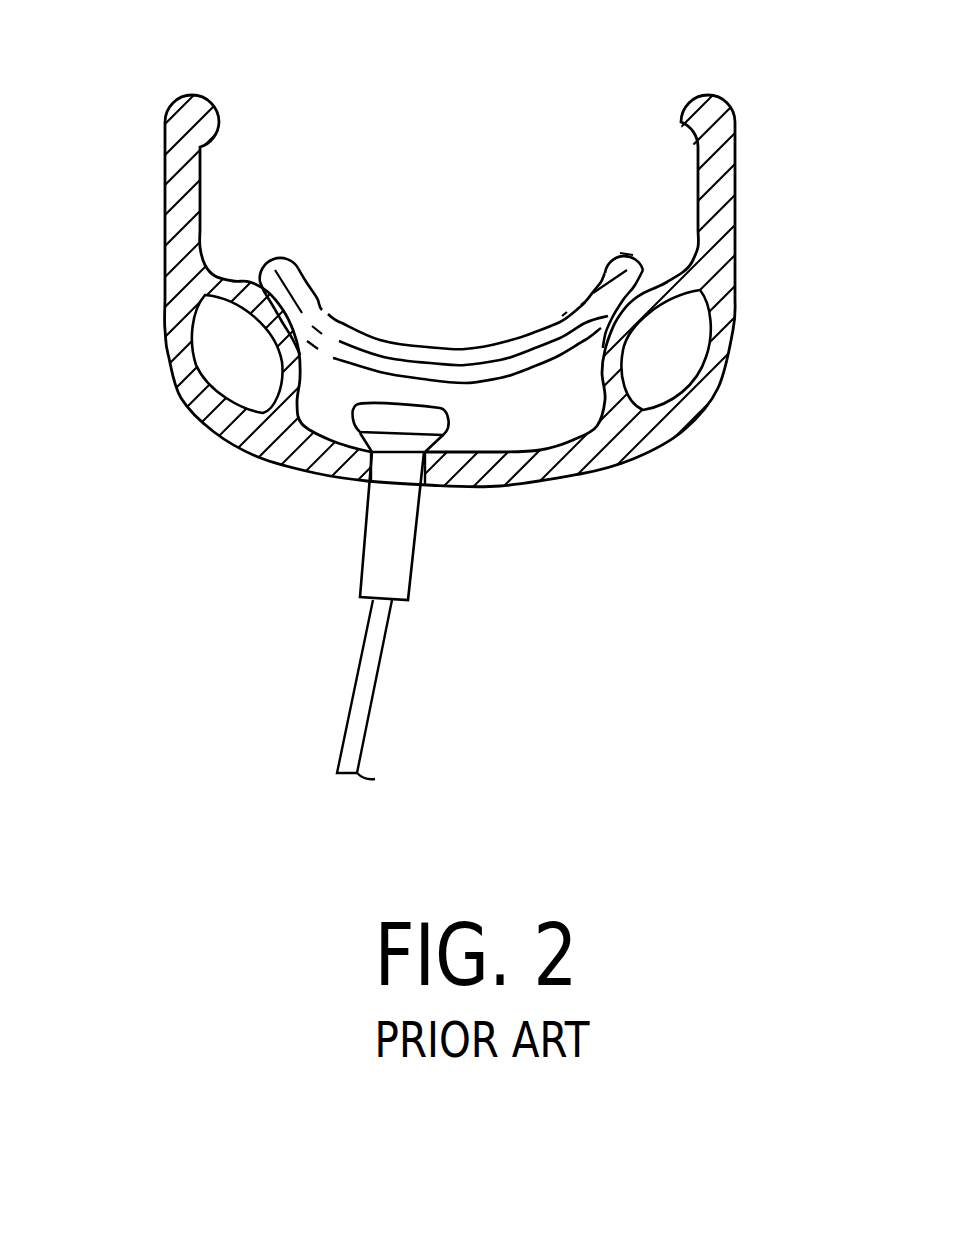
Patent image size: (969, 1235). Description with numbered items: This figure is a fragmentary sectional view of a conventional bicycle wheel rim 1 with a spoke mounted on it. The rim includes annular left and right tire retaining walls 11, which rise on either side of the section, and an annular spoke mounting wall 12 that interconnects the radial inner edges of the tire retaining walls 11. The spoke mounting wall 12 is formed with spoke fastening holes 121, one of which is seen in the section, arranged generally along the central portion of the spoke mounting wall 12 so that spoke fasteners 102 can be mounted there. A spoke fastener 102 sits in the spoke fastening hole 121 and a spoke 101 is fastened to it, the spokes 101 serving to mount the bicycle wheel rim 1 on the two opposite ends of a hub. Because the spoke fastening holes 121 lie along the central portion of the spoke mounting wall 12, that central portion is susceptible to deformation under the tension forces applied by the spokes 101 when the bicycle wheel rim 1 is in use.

The bicycle wheel rim 1 is at (484, 292).
The tire retaining walls 11 is at (185, 210).
The spoke mounting wall 12 is at (565, 460).
The spoke fastening holes 121 is at (323, 467).
The spokes 101 is at (367, 670).
The spoke fasteners 102 is at (385, 535).